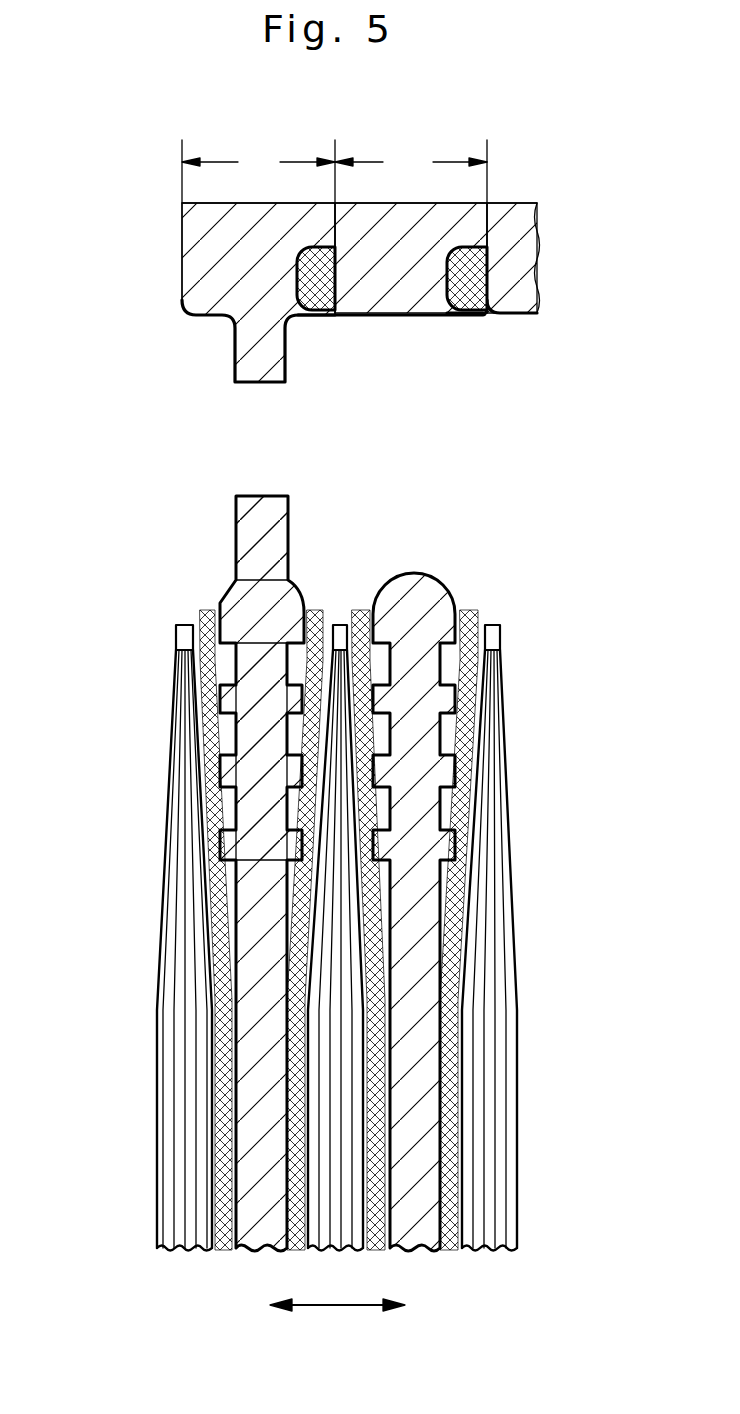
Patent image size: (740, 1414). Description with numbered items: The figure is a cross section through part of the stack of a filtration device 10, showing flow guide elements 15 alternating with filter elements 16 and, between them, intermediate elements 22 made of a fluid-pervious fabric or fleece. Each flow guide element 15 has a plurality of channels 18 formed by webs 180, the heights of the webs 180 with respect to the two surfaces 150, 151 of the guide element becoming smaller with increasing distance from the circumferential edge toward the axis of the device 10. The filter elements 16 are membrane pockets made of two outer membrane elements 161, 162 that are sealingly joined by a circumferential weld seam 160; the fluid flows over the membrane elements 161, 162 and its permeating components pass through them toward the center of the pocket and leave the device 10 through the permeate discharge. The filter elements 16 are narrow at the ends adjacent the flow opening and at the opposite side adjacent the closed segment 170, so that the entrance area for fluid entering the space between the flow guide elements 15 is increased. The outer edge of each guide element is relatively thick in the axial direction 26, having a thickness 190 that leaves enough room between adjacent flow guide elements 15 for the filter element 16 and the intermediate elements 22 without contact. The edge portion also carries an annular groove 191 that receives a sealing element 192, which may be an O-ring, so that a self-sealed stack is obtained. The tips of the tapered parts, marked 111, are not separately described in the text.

The device 10 is at (118, 447).
The flow guide element 15 is at (405, 307).
The filter element 16 is at (478, 988).
The channel 18 is at (458, 660).
The intermediate element 22 is at (455, 757).
The axial direction 26 is at (330, 1305).
The sleeve tip 111 is at (340, 622).
The surface of the guide element 150 is at (443, 1042).
The surface of the guide element 151 is at (366, 1098).
The circumferential weld seam 160 is at (355, 607).
The outer membrane element 161 is at (170, 1185).
The outer membrane element 162 is at (222, 1242).
The closed segment 170 is at (274, 493).
The web 180 is at (310, 607).
The thickness 190 is at (262, 165).
The annular groove 191 is at (290, 295).
The sealing element 192 is at (337, 322).